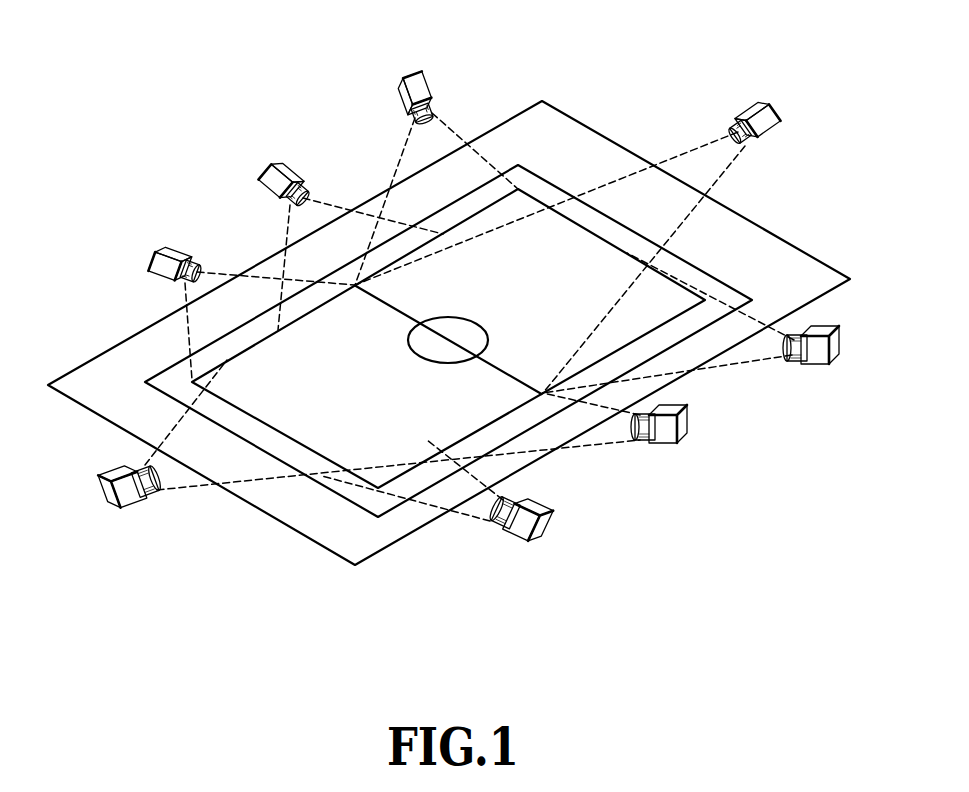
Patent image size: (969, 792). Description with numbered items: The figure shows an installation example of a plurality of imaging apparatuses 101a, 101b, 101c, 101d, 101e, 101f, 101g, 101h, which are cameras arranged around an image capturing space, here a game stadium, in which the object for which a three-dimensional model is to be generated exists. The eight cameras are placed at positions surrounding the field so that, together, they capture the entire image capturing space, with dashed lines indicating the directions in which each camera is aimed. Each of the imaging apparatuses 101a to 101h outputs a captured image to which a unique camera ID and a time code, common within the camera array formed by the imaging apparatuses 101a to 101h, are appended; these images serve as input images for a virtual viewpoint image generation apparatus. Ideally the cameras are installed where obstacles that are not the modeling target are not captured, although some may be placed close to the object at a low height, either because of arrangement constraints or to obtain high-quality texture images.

The imaging apparatus 101a is at (535, 552).
The imaging apparatus 101b is at (680, 447).
The imaging apparatus 101c is at (822, 368).
The imaging apparatus 101d is at (762, 92).
The imaging apparatus 101e is at (411, 68).
The imaging apparatus 101f is at (268, 150).
The imaging apparatus 101g is at (153, 243).
The imaging apparatus 101h is at (122, 508).